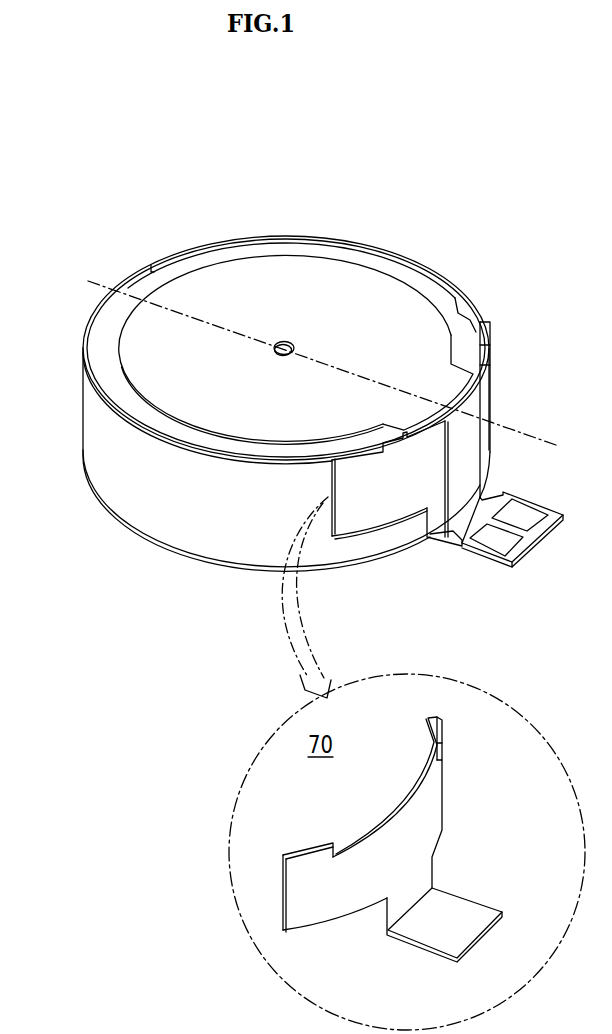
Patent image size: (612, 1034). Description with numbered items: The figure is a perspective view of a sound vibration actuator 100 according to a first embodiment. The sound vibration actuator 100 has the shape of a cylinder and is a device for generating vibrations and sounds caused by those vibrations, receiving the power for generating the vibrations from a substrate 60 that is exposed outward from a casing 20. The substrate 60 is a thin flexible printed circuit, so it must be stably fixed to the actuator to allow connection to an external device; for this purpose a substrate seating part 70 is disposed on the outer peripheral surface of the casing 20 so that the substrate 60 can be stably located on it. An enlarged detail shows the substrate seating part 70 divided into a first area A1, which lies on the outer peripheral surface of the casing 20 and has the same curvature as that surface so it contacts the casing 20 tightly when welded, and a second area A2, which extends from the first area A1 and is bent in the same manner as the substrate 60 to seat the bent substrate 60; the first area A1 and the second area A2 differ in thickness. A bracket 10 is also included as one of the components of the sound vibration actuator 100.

The sound vibration actuator 100 is at (342, 136).
The bracket 10 is at (290, 271).
The casing 20 is at (82, 402).
The substrate 60 is at (472, 482).
The substrate seating part 70 is at (373, 517).
The first area A1 is at (457, 780).
The second area A2 is at (471, 889).